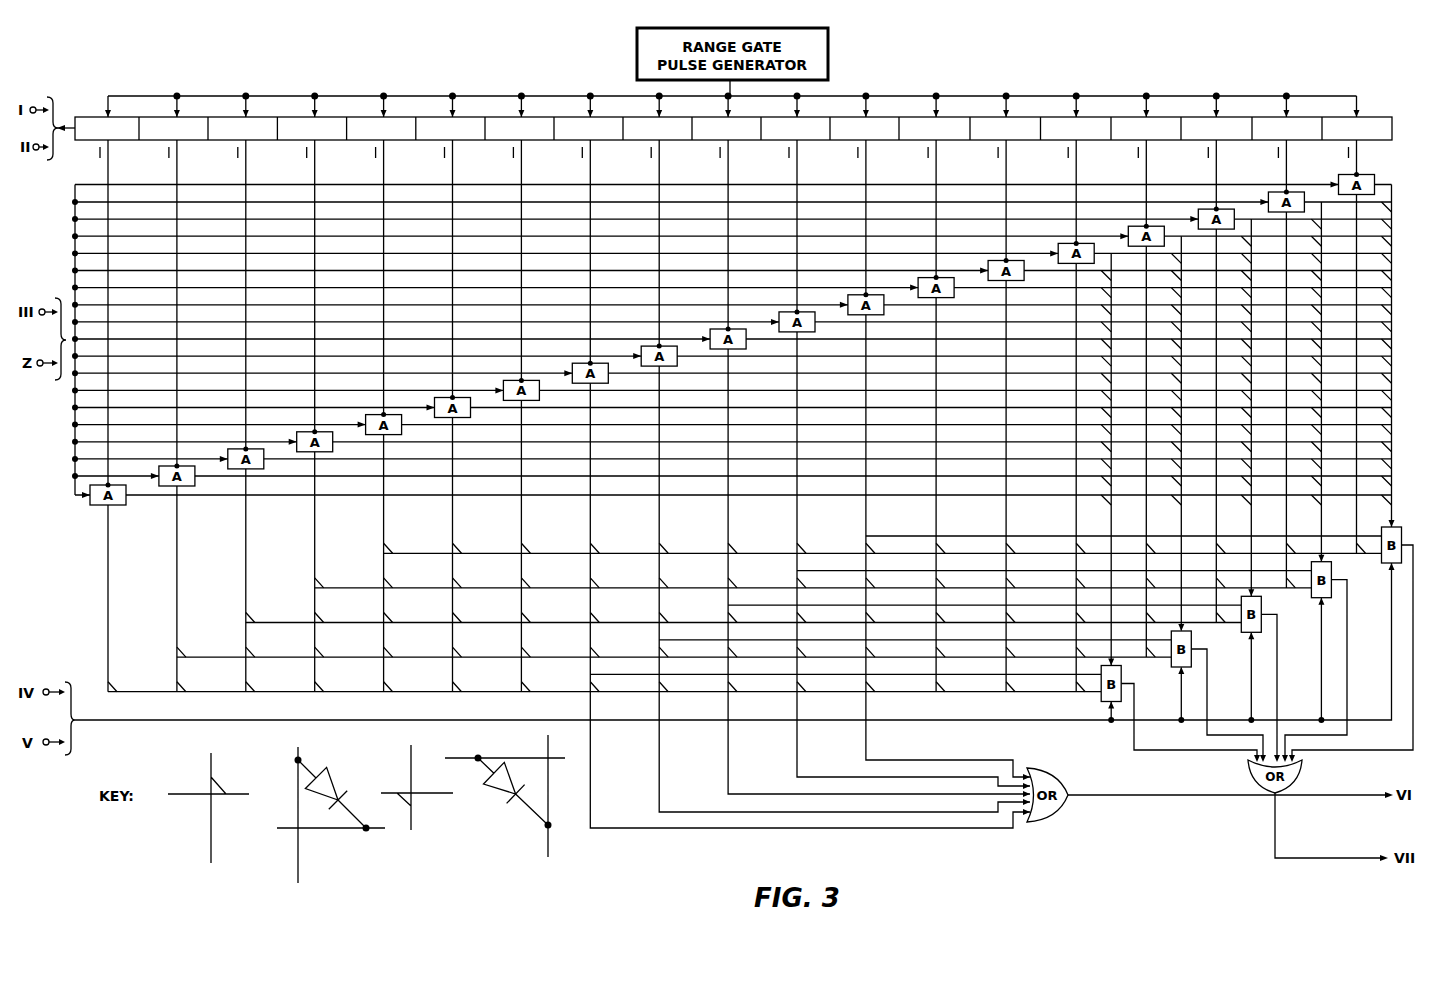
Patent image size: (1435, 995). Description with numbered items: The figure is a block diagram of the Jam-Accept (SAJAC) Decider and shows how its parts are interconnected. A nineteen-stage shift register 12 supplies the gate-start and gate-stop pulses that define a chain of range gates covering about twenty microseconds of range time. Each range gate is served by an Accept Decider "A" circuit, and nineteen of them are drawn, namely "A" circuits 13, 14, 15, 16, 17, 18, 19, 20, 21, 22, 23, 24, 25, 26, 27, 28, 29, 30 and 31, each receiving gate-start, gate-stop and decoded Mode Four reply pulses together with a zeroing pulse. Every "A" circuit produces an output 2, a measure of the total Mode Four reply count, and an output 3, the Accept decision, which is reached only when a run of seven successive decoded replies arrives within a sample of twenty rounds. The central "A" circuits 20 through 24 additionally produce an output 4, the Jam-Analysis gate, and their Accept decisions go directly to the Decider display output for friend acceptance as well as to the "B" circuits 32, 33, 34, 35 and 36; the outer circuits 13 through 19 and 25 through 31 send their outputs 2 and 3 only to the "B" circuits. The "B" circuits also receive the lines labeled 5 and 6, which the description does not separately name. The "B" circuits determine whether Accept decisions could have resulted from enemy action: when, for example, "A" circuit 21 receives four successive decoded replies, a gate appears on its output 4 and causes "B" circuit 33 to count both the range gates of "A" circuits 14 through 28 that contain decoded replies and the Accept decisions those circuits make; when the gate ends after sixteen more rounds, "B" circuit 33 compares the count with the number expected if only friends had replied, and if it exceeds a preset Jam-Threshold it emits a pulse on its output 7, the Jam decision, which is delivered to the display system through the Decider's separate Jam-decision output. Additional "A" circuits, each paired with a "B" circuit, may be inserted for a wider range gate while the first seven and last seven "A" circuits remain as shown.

The reply-count output 2 is at (732, 333).
The Accept-decision output 3 is at (724, 484).
The Jam-Analysis gate output 4 is at (985, 595).
The diode matrix row line 5 is at (745, 620).
The diode matrix output column 6 is at (1243, 453).
The Jam-decision output 7 is at (1269, 643).
The shift register 12 is at (295, 110).
The Accept Decider A circuit 13 is at (118, 507).
The Accept Decider A circuit 14 is at (153, 473).
The Accept Decider A circuit 15 is at (222, 456).
The Accept Decider A circuit 16 is at (291, 439).
The Accept Decider A circuit 17 is at (360, 422).
The Accept Decider A circuit 18 is at (428, 404).
The Accept Decider A circuit 19 is at (497, 387).
The Accept Decider A circuit 20 is at (566, 370).
The Accept Decider A circuit 21 is at (635, 353).
The Accept Decider A circuit 22 is at (704, 336).
The Accept Decider A circuit 23 is at (773, 319).
The Accept Decider A circuit 24 is at (842, 302).
The Accept Decider A circuit 25 is at (912, 285).
The Accept Decider A circuit 26 is at (982, 268).
The Accept Decider A circuit 27 is at (1052, 250).
The Accept Decider A circuit 28 is at (1122, 233).
The Accept Decider A circuit 29 is at (1192, 216).
The Accept Decider A circuit 30 is at (1271, 190).
The Accept Decider A circuit 31 is at (1339, 175).
The B circuit 32 is at (1105, 701).
The B circuit 33 is at (1175, 668).
The B circuit 34 is at (1243, 633).
The B circuit 35 is at (1313, 598).
The B circuit 36 is at (1383, 564).